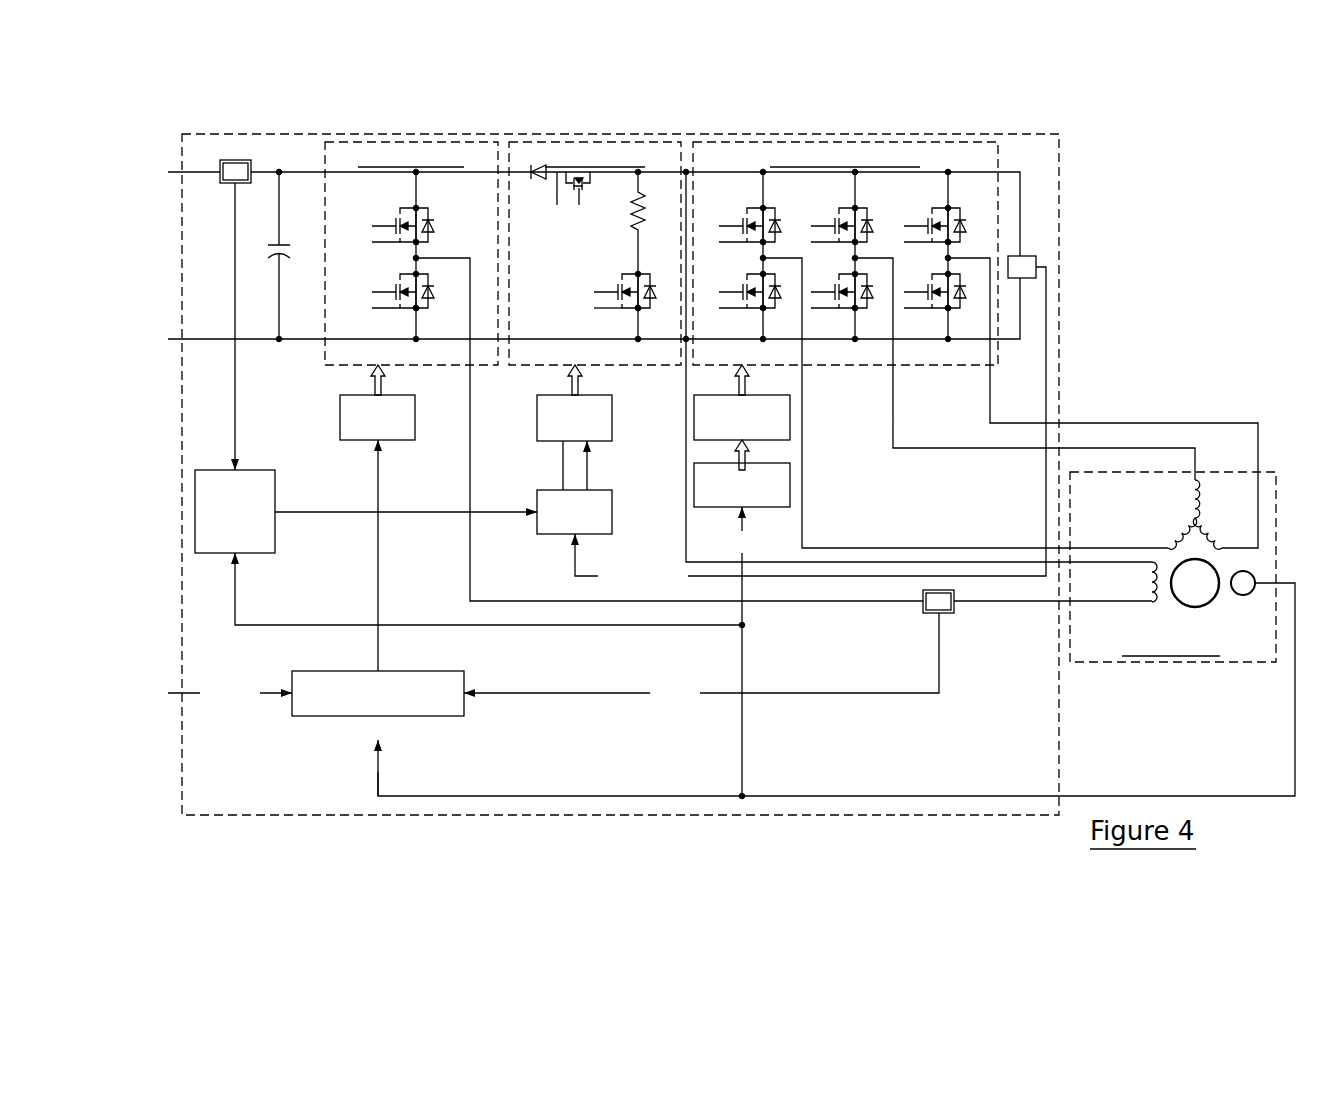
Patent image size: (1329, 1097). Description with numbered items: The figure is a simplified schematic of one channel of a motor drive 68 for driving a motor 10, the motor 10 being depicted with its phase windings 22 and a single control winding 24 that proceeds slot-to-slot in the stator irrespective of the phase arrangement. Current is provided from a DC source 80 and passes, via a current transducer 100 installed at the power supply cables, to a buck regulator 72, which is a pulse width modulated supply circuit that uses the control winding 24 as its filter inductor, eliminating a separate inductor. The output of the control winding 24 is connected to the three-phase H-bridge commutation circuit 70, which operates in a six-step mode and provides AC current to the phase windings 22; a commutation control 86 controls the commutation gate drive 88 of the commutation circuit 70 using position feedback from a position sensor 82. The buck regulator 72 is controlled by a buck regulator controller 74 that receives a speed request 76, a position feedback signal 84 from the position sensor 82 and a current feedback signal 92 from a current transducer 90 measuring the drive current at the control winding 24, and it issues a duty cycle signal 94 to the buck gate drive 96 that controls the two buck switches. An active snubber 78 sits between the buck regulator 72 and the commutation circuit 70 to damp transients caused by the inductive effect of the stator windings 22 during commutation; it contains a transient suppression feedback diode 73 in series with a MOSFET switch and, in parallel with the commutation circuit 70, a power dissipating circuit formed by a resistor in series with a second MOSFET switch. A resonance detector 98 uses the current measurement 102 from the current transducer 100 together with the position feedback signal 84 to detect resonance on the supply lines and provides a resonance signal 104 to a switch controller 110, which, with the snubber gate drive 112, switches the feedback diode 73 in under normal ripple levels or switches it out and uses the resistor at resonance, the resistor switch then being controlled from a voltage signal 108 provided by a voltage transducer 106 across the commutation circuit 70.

The motor 10 is at (1276, 502).
The phase windings 22 is at (1200, 499).
The control winding 24 is at (1152, 593).
The motor drive 68 is at (182, 742).
The commutation circuit 70 is at (960, 142).
The buck regulator 72 is at (346, 142).
The feedback diode 73 is at (535, 168).
The buck regulator controller 74 is at (430, 671).
The speed request 76 is at (268, 696).
The active snubber 78 is at (655, 142).
The DC source 80 is at (567, 258).
The position sensor 82 is at (1243, 595).
The position feedback signal 84 is at (1145, 796).
The commutation control 86 is at (790, 493).
The commutation gate drive 88 is at (790, 426).
The current transducer 90 is at (948, 613).
The current feedback signal 92 is at (855, 693).
The duty cycle signal 94 is at (378, 646).
The buck gate drive 96 is at (405, 440).
The resonance detector 98 is at (210, 553).
The current transducer 100 is at (232, 184).
The current measurement 102 is at (235, 412).
The resonance signal 104 is at (327, 512).
The voltage transducer 106 is at (1036, 262).
The voltage signal 108 is at (1046, 336).
The switch controller 110 is at (612, 510).
The snubber gate drive 112 is at (612, 420).